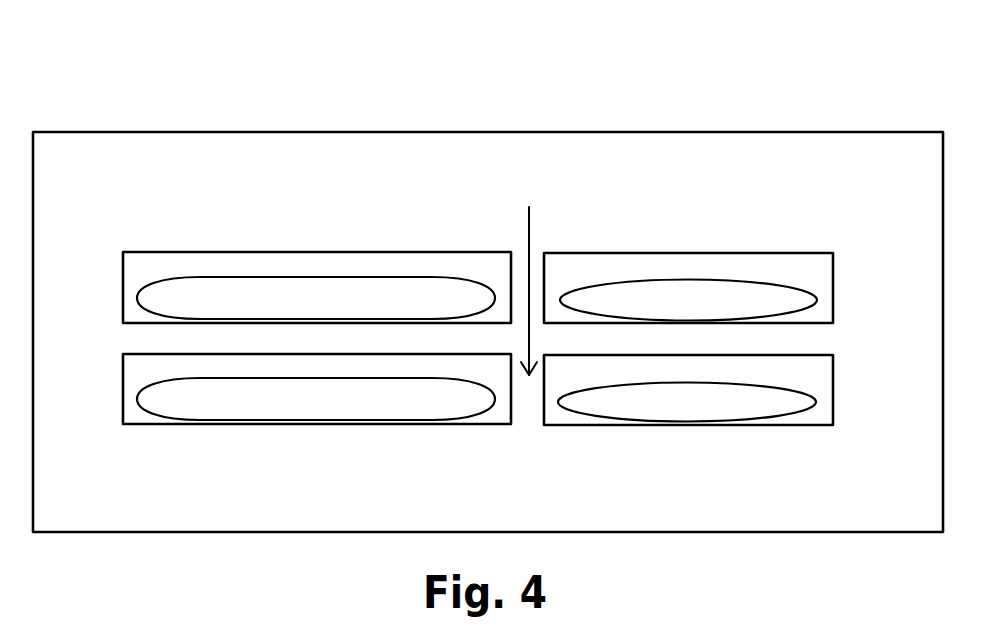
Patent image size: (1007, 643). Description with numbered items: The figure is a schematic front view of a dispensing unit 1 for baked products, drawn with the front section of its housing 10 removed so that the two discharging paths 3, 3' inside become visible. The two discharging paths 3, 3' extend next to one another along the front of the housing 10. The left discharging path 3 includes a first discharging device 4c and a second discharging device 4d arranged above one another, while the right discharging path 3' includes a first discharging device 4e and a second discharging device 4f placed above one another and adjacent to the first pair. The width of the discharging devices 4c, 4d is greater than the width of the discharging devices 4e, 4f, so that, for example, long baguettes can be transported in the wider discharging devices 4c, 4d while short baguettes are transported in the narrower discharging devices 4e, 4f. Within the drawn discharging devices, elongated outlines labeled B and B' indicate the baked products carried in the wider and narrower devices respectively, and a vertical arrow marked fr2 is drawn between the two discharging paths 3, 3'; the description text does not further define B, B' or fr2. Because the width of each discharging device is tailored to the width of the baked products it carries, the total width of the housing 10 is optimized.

The dispensing unit 1 is at (245, 98).
The housing 10 is at (464, 131).
The discharging path 3 is at (279, 329).
The discharging path 3' is at (735, 326).
The first discharging device 4c is at (170, 252).
The second discharging device 4d is at (138, 424).
The first discharging device 4e is at (584, 252).
The second discharging device 4f is at (812, 425).
The bottom of cooking vessel (left) B is at (316, 262).
The bottom of cooking vessel (right) B' is at (687, 431).
The boundary / direction of zone separation fr2 is at (529, 212).